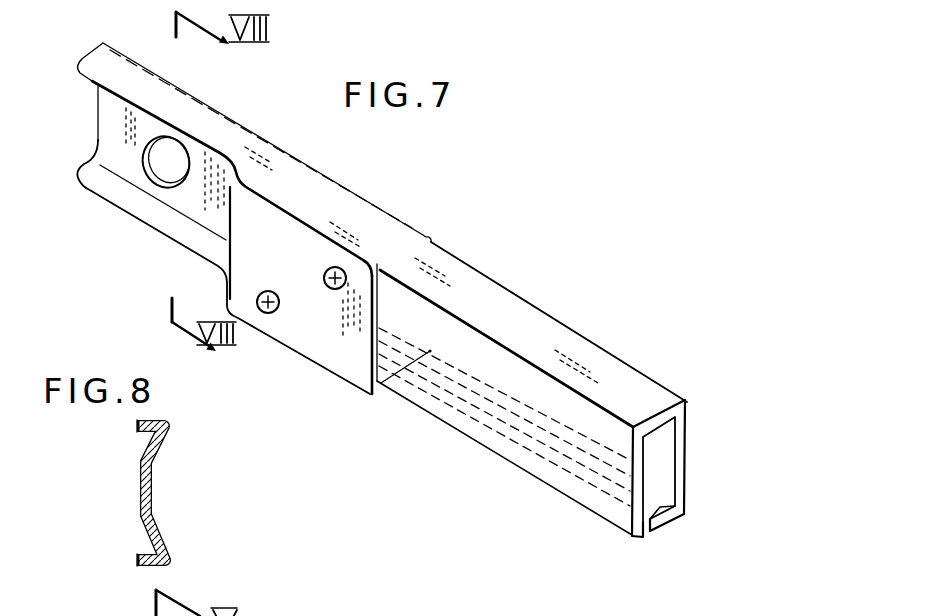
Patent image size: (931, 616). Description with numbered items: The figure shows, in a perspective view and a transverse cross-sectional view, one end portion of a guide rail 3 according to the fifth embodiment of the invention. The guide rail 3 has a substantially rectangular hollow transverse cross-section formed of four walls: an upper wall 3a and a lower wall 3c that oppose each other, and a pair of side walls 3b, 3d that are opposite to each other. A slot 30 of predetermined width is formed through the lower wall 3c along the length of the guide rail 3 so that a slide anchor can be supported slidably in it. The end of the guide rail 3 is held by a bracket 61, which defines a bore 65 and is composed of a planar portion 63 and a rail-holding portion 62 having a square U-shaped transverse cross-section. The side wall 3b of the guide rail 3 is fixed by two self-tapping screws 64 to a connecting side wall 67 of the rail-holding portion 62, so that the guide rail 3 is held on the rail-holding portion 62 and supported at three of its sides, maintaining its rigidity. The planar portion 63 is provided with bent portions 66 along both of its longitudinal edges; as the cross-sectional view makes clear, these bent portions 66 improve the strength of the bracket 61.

In FIG. 7, the guide rail 3 is at (555, 420).
In FIG. 7, the upper wall 3a is at (524, 334).
In FIG. 7, the side wall 3b is at (504, 374).
In FIG. 7, the lower wall 3c is at (645, 532).
In FIG. 7, the side wall 3d is at (685, 457).
In FIG. 7, the slot 30 is at (652, 521).
In FIG. 7, the bracket 61 is at (229, 221).
In FIG. 7, the rail-holding portion 62 is at (300, 352).
In FIG. 7, the planar portion 63 is at (104, 143).
In FIG. 8, the planar portion 63 is at (136, 517).
In FIG. 7, the self-tapping screws 64 is at (327, 270).
In FIG. 7, the bore 65 is at (168, 142).
In FIG. 7, the bent portions 66 is at (148, 100).
In FIG. 8, the bent portions 66 is at (176, 541).
In FIG. 7, the connecting side wall 67 is at (336, 339).